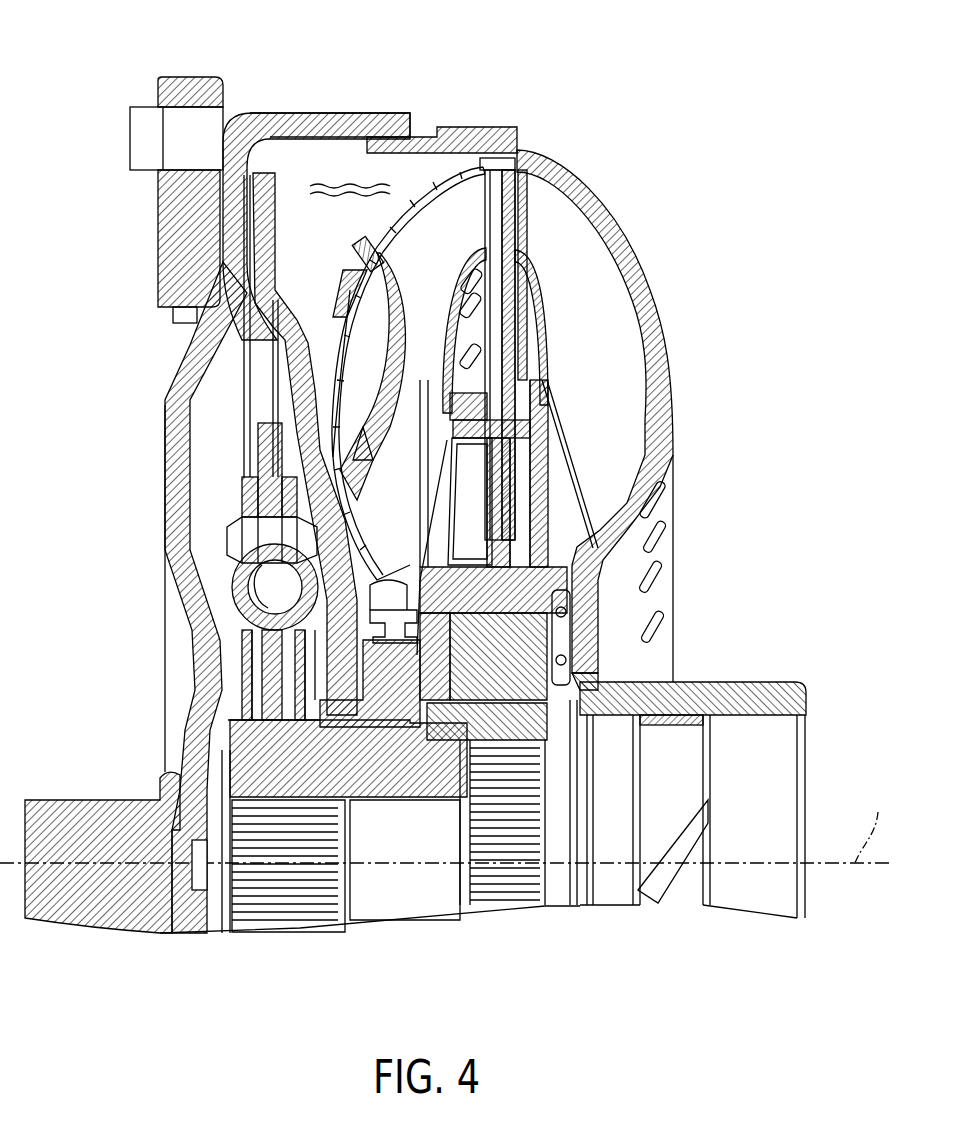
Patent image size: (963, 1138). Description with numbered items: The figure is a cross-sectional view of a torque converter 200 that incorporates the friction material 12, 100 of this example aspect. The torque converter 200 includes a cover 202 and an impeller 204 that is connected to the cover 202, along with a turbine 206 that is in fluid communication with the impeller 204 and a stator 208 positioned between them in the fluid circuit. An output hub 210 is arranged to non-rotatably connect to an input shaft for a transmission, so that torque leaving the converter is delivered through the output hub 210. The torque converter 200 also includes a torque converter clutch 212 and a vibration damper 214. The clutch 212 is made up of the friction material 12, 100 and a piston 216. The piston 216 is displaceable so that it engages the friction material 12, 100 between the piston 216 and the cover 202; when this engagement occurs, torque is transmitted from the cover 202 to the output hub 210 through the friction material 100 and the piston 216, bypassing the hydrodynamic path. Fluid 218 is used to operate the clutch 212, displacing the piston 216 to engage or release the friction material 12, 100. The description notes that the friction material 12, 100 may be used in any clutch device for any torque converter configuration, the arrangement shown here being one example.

The torque converter 200 is at (686, 106).
The cover 202 is at (307, 112).
The impeller 204 is at (600, 353).
The turbine 206 is at (457, 203).
The stator 208 is at (497, 470).
The output hub 210 is at (380, 793).
The torque converter clutch 212 is at (283, 182).
The vibration damper 214 is at (232, 495).
The piston 216 is at (300, 237).
The fluid 218 is at (360, 183).
The friction material 12 is at (148, 200).
The friction material 100 is at (248, 190).